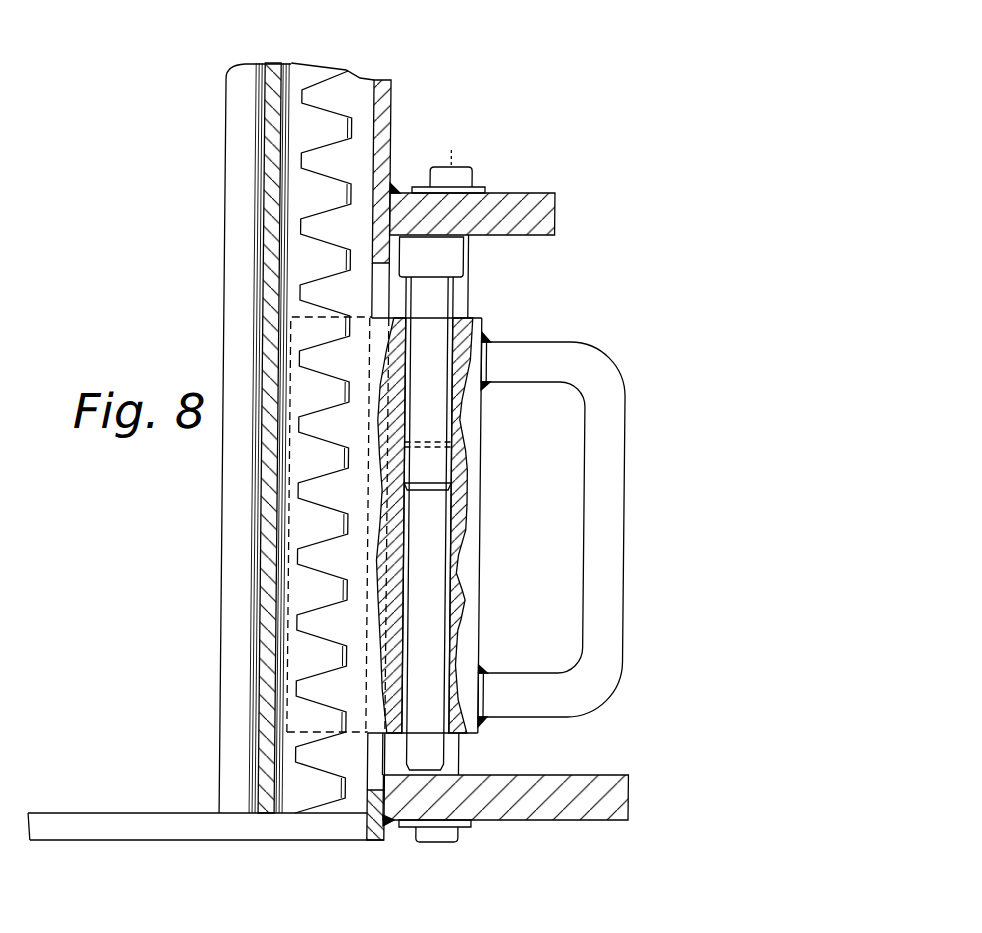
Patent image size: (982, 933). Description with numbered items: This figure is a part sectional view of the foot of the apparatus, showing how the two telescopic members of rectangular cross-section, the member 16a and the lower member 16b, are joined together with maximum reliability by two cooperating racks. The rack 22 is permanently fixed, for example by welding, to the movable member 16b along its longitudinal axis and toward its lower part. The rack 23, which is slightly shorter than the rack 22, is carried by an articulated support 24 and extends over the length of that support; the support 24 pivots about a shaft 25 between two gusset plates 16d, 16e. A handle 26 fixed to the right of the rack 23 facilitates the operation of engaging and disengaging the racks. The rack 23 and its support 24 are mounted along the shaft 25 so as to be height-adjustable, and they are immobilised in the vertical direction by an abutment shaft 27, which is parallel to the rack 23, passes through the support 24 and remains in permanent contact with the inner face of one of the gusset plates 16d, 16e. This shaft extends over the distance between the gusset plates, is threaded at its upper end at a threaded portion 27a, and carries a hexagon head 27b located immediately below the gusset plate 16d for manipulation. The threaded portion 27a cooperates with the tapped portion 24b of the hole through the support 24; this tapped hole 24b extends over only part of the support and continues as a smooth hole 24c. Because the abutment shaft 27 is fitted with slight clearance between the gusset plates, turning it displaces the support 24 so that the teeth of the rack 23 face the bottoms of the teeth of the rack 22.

The telescopic member 16a is at (378, 828).
The lower member 16b is at (267, 587).
The gusset plate 16d is at (517, 203).
The gusset plate 16e is at (573, 792).
The rack 22 is at (307, 660).
The rack 23 is at (373, 690).
The articulated support 24 is at (470, 532).
The tapped portion of hole 24b is at (450, 418).
The smooth hole 24c is at (460, 658).
The shaft 25 is at (450, 757).
The handle 26 is at (607, 520).
The abutment shaft 27 is at (433, 625).
The threaded portion 27a is at (432, 420).
The hexagon head 27b is at (443, 253).